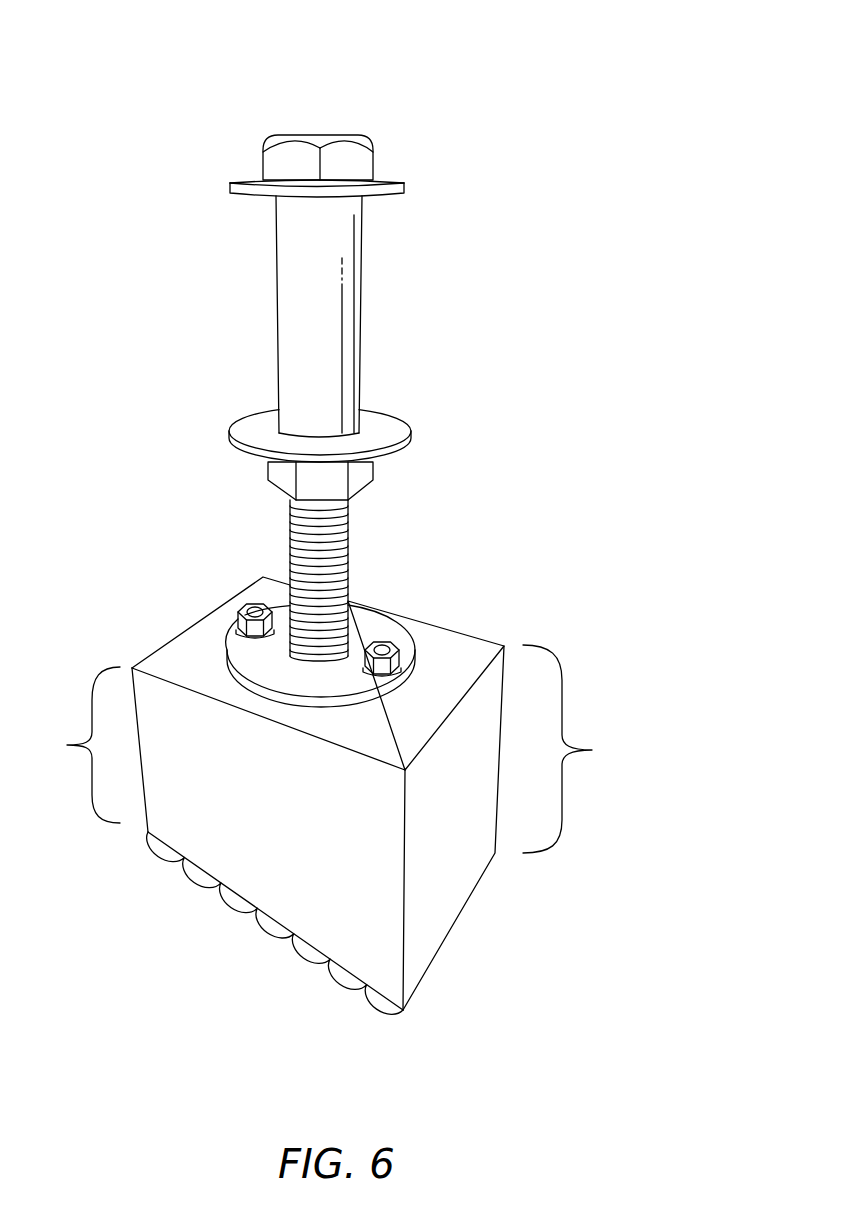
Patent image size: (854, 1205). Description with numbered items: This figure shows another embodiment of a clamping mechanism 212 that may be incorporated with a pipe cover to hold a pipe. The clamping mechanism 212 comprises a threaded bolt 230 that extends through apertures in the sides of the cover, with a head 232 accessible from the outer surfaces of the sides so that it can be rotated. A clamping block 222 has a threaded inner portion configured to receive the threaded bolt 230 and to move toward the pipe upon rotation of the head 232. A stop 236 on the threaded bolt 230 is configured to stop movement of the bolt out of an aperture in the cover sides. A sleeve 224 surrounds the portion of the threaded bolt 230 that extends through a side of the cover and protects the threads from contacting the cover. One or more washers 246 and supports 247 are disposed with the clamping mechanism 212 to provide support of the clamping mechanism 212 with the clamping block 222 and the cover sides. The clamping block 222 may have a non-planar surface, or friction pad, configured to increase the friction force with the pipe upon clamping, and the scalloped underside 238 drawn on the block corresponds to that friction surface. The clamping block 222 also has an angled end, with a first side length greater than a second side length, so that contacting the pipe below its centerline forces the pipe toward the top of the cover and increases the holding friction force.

The clamping mechanism 212 is at (433, 119).
The head 232 is at (320, 147).
The washer 246 is at (403, 188).
The sleeve 224 is at (335, 320).
The stop 236 is at (343, 477).
The threaded bolt 230 is at (333, 560).
The clamping block 222 is at (453, 665).
The support 247 is at (243, 637).
The scalloped edge 238 is at (162, 848).